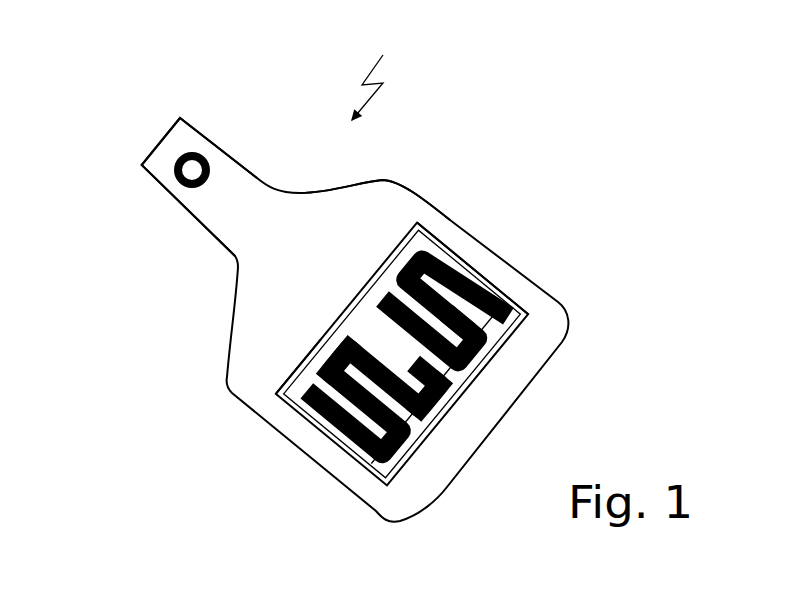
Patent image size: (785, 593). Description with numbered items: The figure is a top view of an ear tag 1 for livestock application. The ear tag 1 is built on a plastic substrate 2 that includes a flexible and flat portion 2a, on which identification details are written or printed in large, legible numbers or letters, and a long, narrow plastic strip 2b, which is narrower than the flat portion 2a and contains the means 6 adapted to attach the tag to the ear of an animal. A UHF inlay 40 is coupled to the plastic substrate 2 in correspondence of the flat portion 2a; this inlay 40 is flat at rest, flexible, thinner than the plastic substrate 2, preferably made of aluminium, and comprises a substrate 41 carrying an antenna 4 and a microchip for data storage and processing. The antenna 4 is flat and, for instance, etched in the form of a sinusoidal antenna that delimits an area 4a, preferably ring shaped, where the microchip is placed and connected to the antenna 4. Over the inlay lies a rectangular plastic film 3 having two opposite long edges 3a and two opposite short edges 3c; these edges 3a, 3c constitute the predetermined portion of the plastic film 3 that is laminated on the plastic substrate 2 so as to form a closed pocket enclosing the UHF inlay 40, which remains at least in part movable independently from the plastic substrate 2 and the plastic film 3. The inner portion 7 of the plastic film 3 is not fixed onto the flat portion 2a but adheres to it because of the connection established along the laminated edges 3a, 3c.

The ear tag 1 is at (382, 72).
The plastic substrate 2 is at (227, 138).
The flexible and flat portion 2a is at (381, 200).
The plastic strip 2b is at (162, 162).
The plastic film 3 is at (529, 303).
The long edges of the plastic film 3a is at (352, 342).
The short edges of the plastic film 3c is at (487, 283).
The antenna 4 is at (458, 253).
The area delimited by the antenna 4a is at (443, 335).
The means adapted to attach the tag 6 is at (188, 191).
The inner portion of the plastic film 7 is at (410, 415).
The UHF inlay 40 is at (335, 345).
The substrate of the UHF inlay 41 is at (340, 338).